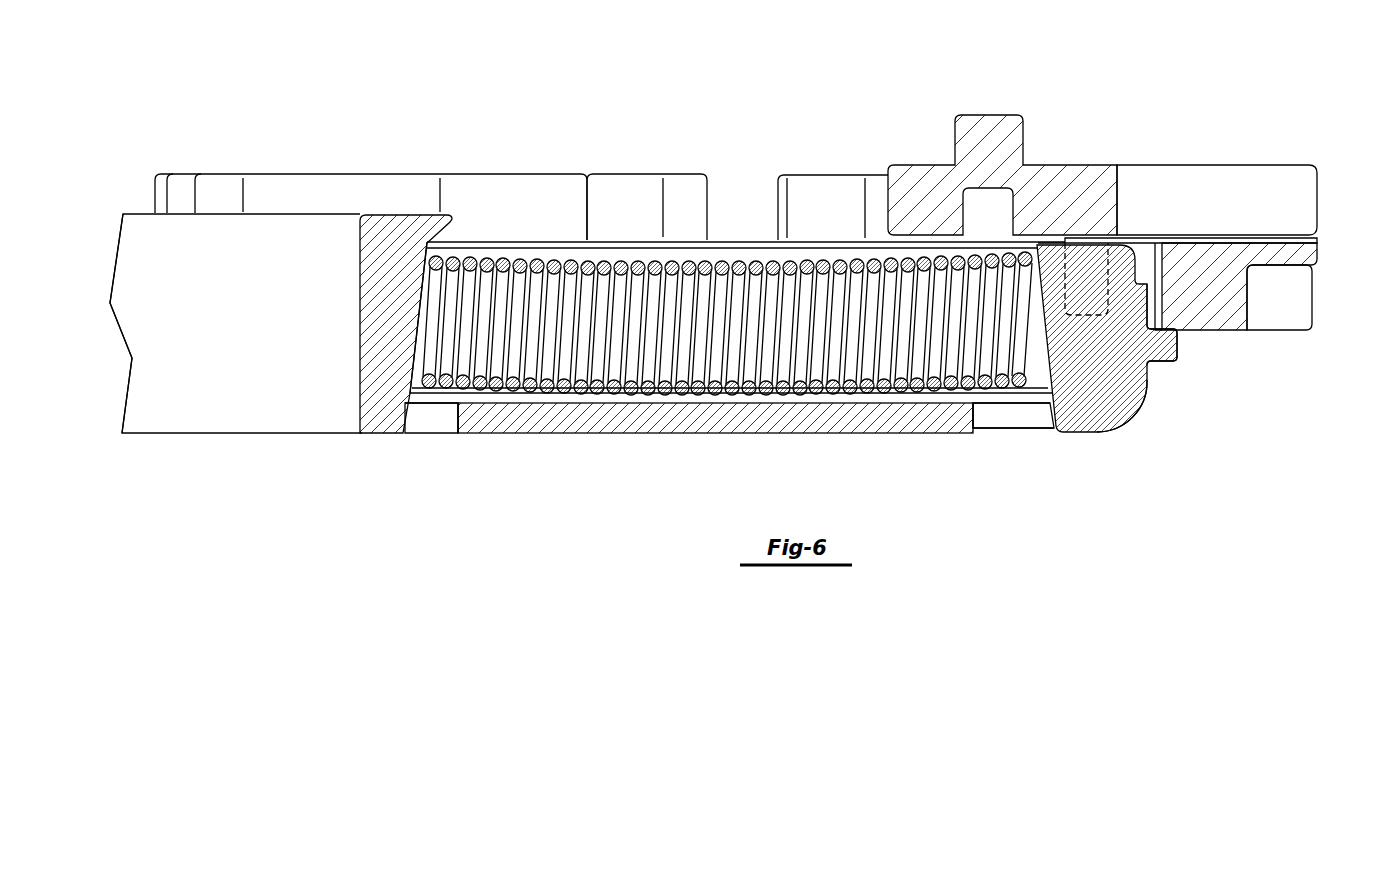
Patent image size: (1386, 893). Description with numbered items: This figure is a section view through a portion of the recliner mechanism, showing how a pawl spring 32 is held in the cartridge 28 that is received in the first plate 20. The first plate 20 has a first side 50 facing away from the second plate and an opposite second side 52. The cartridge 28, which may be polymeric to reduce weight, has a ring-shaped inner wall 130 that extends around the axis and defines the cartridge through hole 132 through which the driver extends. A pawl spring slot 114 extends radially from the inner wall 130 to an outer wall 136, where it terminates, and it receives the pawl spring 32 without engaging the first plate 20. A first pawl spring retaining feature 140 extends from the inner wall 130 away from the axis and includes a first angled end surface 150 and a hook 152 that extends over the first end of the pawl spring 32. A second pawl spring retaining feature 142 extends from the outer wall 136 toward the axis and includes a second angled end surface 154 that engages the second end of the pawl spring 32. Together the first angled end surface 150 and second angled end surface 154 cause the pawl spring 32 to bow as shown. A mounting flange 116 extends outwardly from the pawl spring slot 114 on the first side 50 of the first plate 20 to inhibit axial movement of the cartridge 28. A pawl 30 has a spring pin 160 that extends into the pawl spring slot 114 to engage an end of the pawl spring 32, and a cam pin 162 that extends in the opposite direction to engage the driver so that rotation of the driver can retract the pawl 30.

The first plate 20 is at (1313, 298).
The cartridge 28 is at (1132, 417).
The pawl 30 is at (1180, 165).
The pawl spring 32 is at (612, 393).
The first side 50 is at (1273, 332).
The second side 52 is at (288, 175).
The pawl spring slot 114 is at (733, 242).
The mounting flange 116 is at (1180, 345).
The inner wall 130 is at (308, 433).
The cartridge through hole 132 is at (262, 431).
The outer wall 136 is at (1045, 366).
The first pawl spring retaining feature 140 is at (422, 458).
The first angled end surface 150 is at (410, 397).
The second pawl spring retaining feature 142 is at (989, 456).
The second angled end surface 154 is at (1050, 393).
The hook 152 is at (455, 218).
The spring pin 160 is at (1085, 317).
The cam pin 162 is at (990, 113).